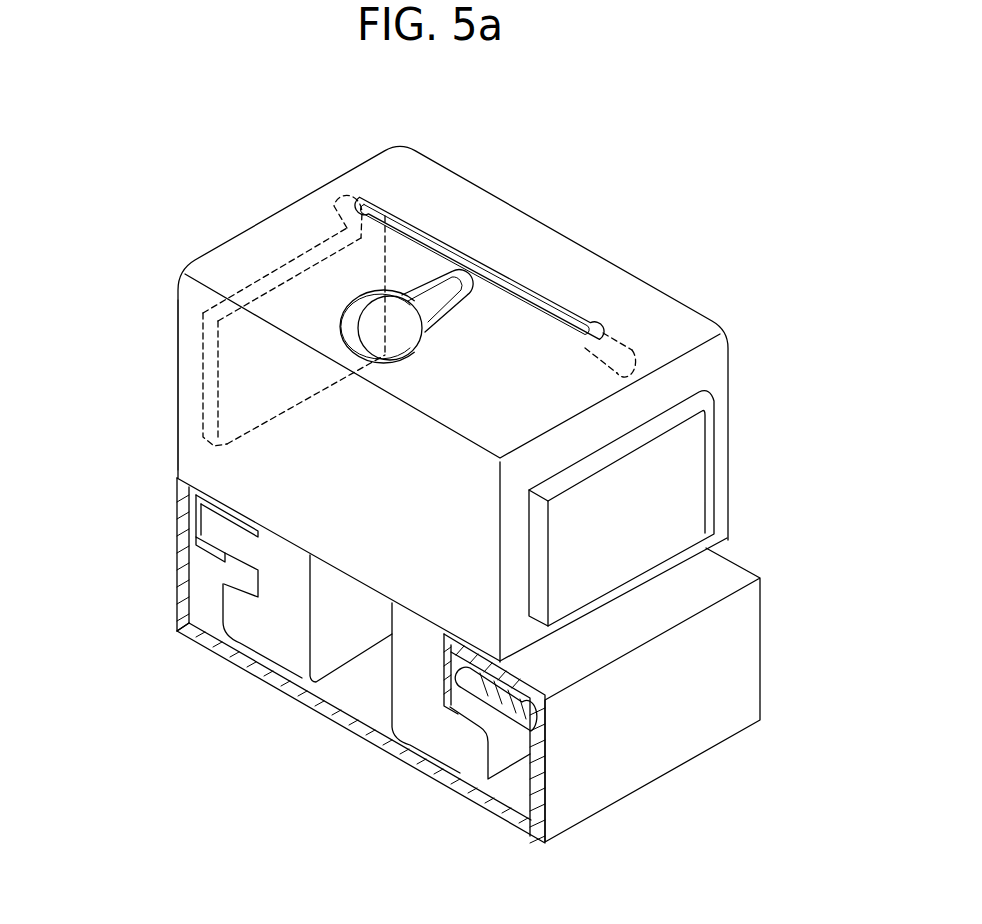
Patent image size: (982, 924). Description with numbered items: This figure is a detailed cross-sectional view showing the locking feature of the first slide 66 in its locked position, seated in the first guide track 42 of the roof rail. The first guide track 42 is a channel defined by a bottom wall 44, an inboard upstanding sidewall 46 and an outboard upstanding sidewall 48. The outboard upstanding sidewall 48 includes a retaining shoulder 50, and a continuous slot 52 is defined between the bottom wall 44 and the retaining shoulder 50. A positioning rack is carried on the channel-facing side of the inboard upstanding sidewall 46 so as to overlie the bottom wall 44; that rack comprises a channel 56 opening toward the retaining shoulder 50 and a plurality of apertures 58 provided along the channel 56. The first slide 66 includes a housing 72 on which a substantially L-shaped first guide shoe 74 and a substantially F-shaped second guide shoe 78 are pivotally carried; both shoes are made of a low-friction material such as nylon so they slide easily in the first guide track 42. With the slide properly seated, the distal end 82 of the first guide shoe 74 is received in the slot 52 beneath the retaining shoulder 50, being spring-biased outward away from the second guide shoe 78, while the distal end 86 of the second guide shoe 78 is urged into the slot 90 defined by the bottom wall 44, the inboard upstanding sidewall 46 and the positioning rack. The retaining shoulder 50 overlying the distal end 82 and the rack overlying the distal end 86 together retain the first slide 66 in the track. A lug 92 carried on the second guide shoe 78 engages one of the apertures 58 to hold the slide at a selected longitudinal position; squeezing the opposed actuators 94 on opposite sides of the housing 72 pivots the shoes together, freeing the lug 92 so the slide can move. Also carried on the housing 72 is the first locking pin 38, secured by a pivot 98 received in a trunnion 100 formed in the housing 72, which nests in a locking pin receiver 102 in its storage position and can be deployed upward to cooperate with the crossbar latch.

The first slide 66 is at (683, 195).
The housing 72 is at (192, 412).
The pivot 98 is at (537, 310).
The locking pin receiver 102 is at (330, 320).
The first locking pin 38 is at (373, 318).
The trunnion 100 is at (347, 198).
The opposed actuators 94 is at (680, 478).
The inboard upstanding sidewall 46 is at (176, 578).
The lug 92 is at (213, 513).
The apertures 58 is at (220, 528).
The channel 56 is at (205, 566).
The slot 90 is at (203, 577).
The distal end 86 is at (190, 631).
The second guide shoe 78 is at (262, 648).
The bottom wall 44 is at (312, 717).
The first guide track 42 is at (342, 745).
The retaining shoulder 50 is at (475, 706).
The distal end 82 is at (508, 760).
The continuous slot 52 is at (503, 790).
The first guide shoe 74 is at (440, 745).
The outboard upstanding sidewall 48 is at (645, 745).